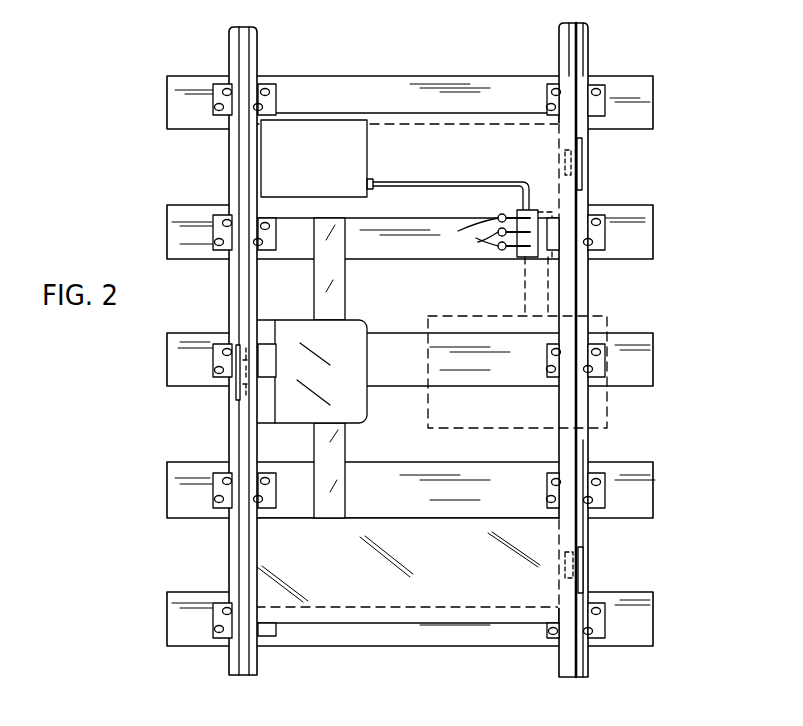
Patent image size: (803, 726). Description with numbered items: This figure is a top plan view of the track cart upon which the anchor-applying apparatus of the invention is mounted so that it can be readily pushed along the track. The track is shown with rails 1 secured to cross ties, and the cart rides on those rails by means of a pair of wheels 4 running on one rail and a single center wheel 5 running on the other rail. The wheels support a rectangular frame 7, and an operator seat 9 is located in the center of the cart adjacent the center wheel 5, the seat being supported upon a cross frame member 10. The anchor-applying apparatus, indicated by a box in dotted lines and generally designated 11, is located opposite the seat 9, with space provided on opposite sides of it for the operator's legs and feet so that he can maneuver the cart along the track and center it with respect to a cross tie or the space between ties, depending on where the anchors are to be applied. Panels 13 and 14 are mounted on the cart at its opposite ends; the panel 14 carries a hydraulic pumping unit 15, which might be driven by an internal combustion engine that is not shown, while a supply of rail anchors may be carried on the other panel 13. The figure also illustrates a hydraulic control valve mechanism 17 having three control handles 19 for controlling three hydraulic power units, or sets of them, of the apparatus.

The rails 1 is at (405, 350).
The wheels 4 is at (564, 158).
The center wheel 5 is at (250, 373).
The rectangular frame 7 is at (243, 297).
The operator seat 9 is at (350, 329).
The cross frame member 10 is at (346, 284).
The anchor-applying apparatus 11 is at (604, 320).
The panel 13 is at (336, 569).
The panel 14 is at (442, 162).
The hydraulic pumping unit 15 is at (332, 162).
The hydraulic control valve mechanism 17 is at (520, 260).
The control handles 19 is at (491, 232).